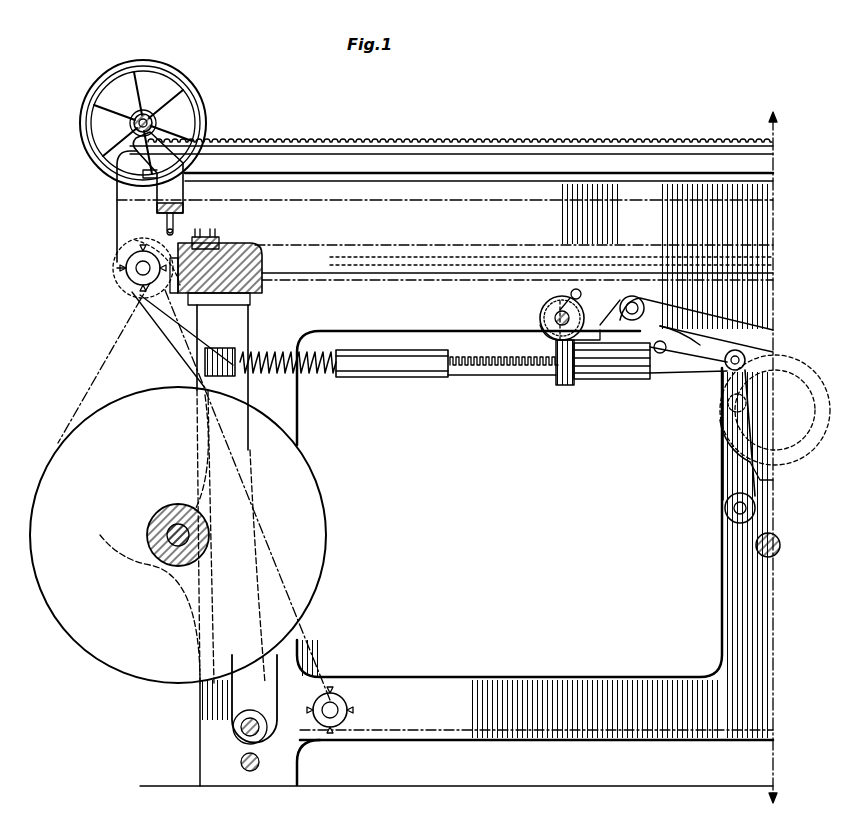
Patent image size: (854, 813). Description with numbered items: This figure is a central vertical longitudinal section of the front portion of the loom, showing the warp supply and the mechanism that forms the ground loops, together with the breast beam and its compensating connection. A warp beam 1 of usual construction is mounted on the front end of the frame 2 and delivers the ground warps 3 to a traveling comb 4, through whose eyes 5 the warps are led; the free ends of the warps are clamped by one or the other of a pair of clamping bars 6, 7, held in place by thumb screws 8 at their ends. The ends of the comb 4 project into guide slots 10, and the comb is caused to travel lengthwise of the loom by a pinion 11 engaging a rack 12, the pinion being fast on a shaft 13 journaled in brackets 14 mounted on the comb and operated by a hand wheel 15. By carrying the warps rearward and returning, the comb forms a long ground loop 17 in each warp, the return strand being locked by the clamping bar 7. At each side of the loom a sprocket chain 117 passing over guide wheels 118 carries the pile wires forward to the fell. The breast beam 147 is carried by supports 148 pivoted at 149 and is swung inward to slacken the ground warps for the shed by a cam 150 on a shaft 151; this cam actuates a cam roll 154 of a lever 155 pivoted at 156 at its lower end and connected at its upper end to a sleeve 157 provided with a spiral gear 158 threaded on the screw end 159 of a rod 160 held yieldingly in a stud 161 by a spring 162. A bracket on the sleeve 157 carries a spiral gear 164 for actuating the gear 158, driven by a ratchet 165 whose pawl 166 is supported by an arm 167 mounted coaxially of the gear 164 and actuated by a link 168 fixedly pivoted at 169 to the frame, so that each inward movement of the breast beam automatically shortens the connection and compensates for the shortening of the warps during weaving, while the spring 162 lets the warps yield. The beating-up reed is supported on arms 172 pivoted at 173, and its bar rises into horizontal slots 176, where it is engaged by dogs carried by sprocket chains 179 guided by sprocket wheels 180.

The warp beam 1 is at (328, 560).
The frame 2 is at (498, 678).
The ground warps 3 is at (100, 376).
The traveling comb 4 is at (186, 206).
The eyes 5 is at (165, 229).
The clamping bar 6 is at (180, 224).
The clamping bar 7 is at (220, 240).
The thumb screws 8 is at (212, 229).
The guide slots 10 is at (333, 172).
The pinion 11 is at (130, 125).
The rack 12 is at (250, 140).
The shaft 13 is at (146, 112).
The brackets 14 is at (150, 145).
The hand wheel 15 is at (190, 95).
The loop 17 is at (483, 270).
The sprocket chain 117 is at (458, 249).
The guide wheels 118 is at (127, 264).
The breast beam 147 is at (266, 290).
The supports 148 is at (250, 352).
The pivot 149 is at (238, 728).
The cam 150 is at (742, 458).
The shaft 151 is at (735, 440).
The cam roll 154 is at (725, 428).
The lever 155 is at (726, 490).
The pivot 156 is at (738, 512).
The sleeve 157 is at (617, 380).
The spiral gear 158 is at (562, 386).
The screw end 159 is at (490, 377).
The rod 160 is at (410, 378).
The stud 161 is at (225, 348).
The spring 162 is at (318, 376).
The spiral gear 164 is at (548, 334).
The ratchet 165 is at (542, 312).
The pawl 166 is at (578, 289).
The arm 167 is at (555, 345).
The link 168 is at (621, 326).
The pivot 169 is at (663, 354).
The arms 172 is at (696, 325).
The pivot 173 is at (634, 302).
The horizontal slots 176 is at (468, 274).
The sprocket chains 179 is at (400, 274).
The sprocket wheels 180 is at (140, 238).